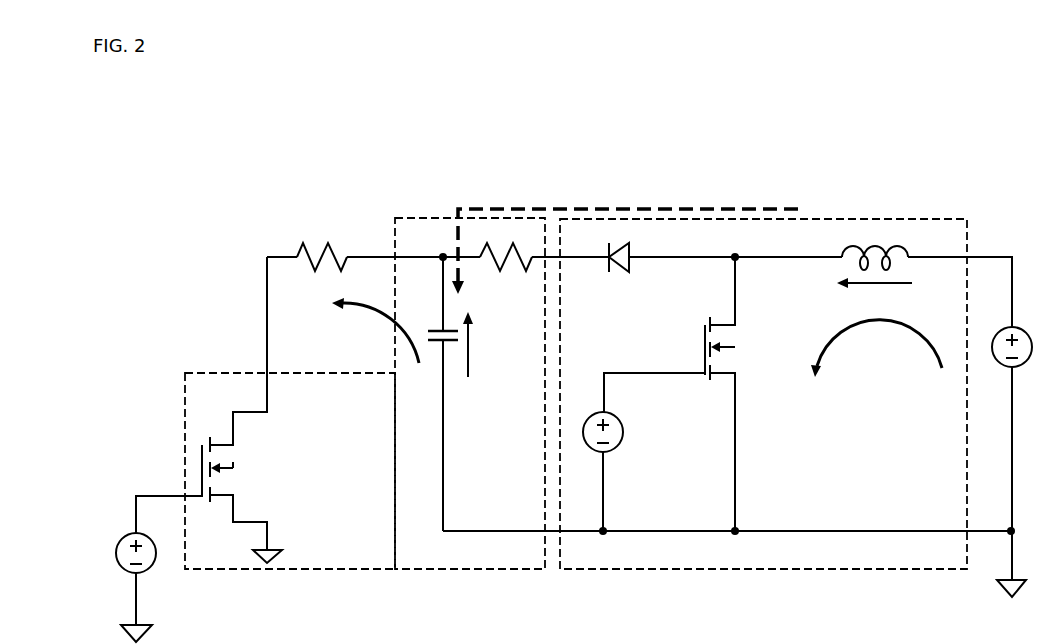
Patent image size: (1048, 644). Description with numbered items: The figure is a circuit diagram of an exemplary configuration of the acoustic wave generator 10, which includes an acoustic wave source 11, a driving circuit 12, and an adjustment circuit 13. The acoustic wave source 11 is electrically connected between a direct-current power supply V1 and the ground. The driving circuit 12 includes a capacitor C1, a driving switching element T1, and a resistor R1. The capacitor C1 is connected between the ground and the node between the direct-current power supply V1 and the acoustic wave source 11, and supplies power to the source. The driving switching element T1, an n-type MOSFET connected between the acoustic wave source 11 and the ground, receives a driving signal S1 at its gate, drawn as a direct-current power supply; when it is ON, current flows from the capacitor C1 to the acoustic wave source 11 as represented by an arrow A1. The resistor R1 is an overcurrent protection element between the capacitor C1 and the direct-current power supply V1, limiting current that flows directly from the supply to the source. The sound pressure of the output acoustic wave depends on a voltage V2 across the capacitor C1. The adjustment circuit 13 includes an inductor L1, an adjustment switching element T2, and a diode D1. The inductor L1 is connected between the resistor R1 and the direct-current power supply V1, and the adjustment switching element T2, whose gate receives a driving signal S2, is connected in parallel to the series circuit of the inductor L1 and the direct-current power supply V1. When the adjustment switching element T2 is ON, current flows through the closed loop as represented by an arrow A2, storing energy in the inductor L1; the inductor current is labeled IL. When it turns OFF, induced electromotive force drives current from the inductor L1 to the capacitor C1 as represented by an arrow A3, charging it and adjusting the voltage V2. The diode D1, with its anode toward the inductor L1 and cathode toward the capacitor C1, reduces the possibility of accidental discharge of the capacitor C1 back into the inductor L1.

The acoustic wave generator 10 is at (155, 148).
The acoustic wave source 11 is at (316, 254).
The driving circuit 12 is at (212, 372).
The adjustment circuit 13 is at (931, 218).
The driving switching element T1 is at (201, 447).
The driving signal S1 is at (116, 544).
The capacitor C1 is at (439, 328).
The resistor R1 is at (511, 270).
The voltage across the capacitor V2 is at (481, 344).
The arrow A1 is at (375, 330).
The arrow A3 is at (625, 238).
The diode D1 is at (617, 273).
The adjustment switching element T2 is at (702, 334).
The driving signal S2 is at (590, 411).
The inductor L1 is at (872, 240).
The inductor current IL is at (883, 292).
The arrow A2 is at (876, 348).
The direct-current power supply V1 is at (1026, 333).